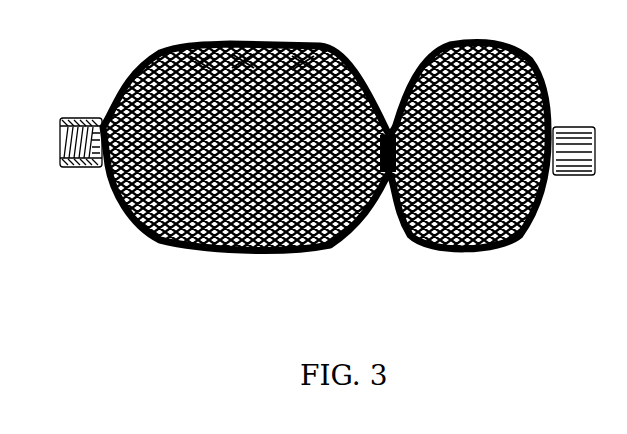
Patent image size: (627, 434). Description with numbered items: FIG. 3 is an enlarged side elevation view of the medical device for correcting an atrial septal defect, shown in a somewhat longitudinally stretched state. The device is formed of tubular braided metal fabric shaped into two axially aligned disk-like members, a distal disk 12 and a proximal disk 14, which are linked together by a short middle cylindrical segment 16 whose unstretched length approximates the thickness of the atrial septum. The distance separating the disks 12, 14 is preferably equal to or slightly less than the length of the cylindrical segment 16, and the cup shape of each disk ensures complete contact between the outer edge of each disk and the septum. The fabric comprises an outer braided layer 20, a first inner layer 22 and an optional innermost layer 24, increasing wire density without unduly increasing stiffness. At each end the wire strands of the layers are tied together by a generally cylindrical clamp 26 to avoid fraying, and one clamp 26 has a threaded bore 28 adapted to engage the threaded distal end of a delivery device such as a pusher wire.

The distal disk 12 is at (166, 52).
The proximal disk 14 is at (515, 53).
The cylindrical segment 16 is at (387, 127).
The outer braided layer 20 is at (205, 46).
The first inner layer 22 is at (244, 44).
The innermost layer 24 is at (303, 47).
The clamp 26 is at (72, 118).
The threaded bore 28 is at (62, 143).